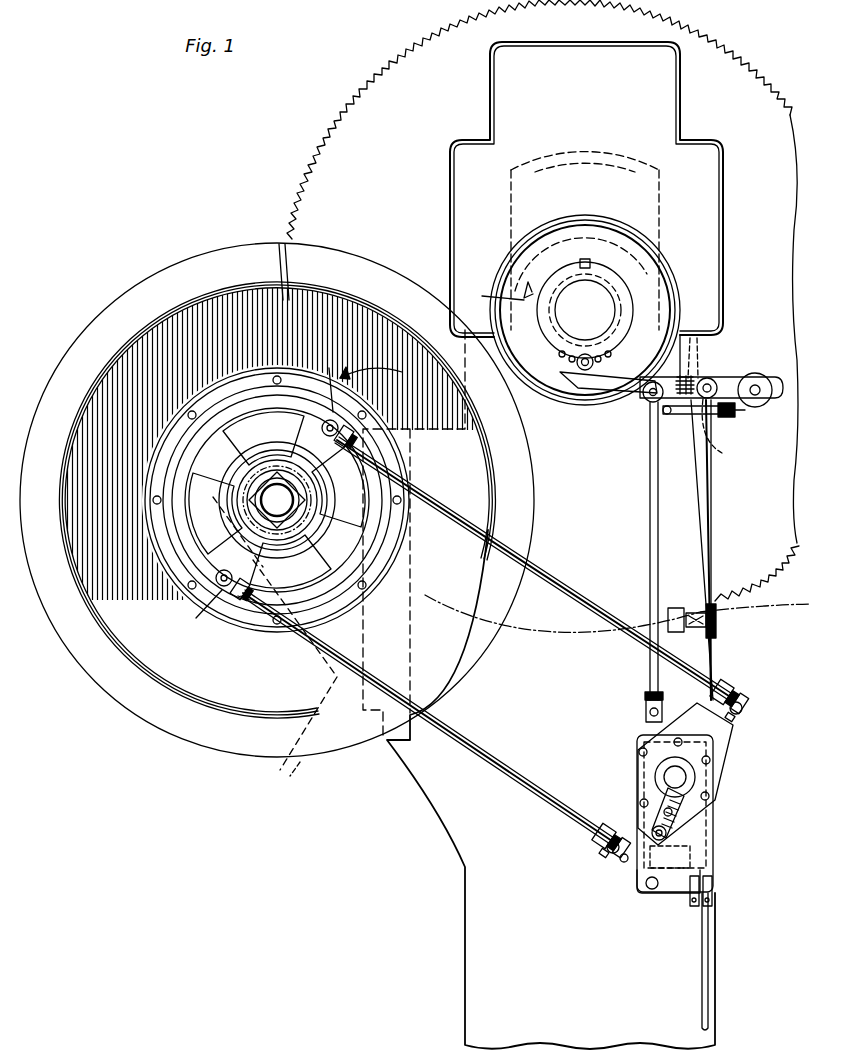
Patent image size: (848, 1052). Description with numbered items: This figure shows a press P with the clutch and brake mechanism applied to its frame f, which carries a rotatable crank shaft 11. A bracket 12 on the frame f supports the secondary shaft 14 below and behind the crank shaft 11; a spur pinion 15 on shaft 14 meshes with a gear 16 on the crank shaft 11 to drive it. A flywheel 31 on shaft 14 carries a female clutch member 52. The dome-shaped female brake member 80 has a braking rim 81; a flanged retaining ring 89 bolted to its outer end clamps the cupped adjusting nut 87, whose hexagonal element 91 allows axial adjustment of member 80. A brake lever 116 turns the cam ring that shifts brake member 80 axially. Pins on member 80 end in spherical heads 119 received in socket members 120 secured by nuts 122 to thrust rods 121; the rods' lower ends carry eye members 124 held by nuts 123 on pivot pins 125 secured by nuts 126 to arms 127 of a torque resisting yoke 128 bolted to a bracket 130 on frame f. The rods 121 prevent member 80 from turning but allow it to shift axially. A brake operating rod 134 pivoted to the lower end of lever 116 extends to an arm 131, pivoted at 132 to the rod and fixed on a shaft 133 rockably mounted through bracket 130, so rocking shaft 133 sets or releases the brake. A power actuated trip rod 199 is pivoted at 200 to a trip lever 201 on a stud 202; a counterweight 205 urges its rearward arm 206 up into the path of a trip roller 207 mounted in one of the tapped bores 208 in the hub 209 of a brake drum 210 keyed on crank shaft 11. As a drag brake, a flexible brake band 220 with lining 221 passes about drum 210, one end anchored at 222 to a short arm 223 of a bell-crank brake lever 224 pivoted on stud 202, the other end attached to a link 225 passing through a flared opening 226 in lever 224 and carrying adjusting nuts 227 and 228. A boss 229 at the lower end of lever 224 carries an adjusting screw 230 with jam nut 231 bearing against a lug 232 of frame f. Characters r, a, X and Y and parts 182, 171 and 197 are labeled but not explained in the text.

The press P is at (585, 44).
The gear 16 is at (305, 180).
The brake lining 221 is at (585, 233).
The brake drum 210 is at (650, 238).
The brake band 220 is at (640, 255).
The hub 209 is at (615, 288).
The direction of rotation r is at (499, 293).
The crank shaft 11 is at (585, 299).
The trip roller 207 is at (585, 354).
The tapped bores 208 is at (607, 350).
The short arm 223 is at (696, 372).
The stud 202 is at (711, 378).
The trip lever 201 is at (720, 378).
The counterweight 205 is at (755, 374).
The anchorage 222 is at (700, 335).
The rearward arm 206 is at (582, 396).
The pivot 200 is at (645, 398).
The link 225 is at (684, 416).
The adjusting nut 227 is at (744, 411).
The adjusting nut 228 is at (727, 418).
The flared opening 226 is at (722, 452).
The bell-crank brake lever 224 is at (712, 478).
The trip rod 199 is at (648, 490).
The boss 229 is at (706, 600).
The lug 232 is at (668, 612).
The adjusting screw 230 is at (708, 618).
The jam nut 231 is at (714, 628).
The female brake member 80 is at (205, 442).
The flanged retaining ring 89 is at (268, 476).
The spur pinion 15 is at (238, 479).
The spherical heads 119 is at (252, 496).
The direction arrow a is at (370, 384).
The socket members 120 is at (320, 426).
The adjusting nut 87 is at (300, 490).
The secondary shaft 14 is at (277, 500).
The hexagonal element 91 is at (306, 512).
The brake lever 116 is at (300, 532).
The female clutch member 52 is at (411, 531).
The rim 81 is at (398, 585).
The thrust rods 121 is at (488, 762).
The nuts 122 is at (236, 604).
The flywheel 31 is at (163, 728).
The bracket 12 is at (295, 760).
The brake operating rod 134 is at (515, 720).
The nuts 126 is at (734, 720).
The nuts 123 is at (594, 840).
The axis Y is at (728, 730).
The axis X is at (722, 712).
The pivot pins 125 is at (608, 852).
The eye members 124 is at (625, 864).
The bracket 182 is at (682, 892).
The plate 171 is at (694, 908).
The rod 197 is at (702, 957).
The bracket 130 is at (714, 883).
The pivot 132 is at (666, 830).
The arm 131 is at (684, 812).
The shaft 133 is at (687, 780).
The torque resisting yoke 128 is at (716, 772).
The outwardly projecting arms 127 is at (740, 700).
The frame f is at (463, 936).